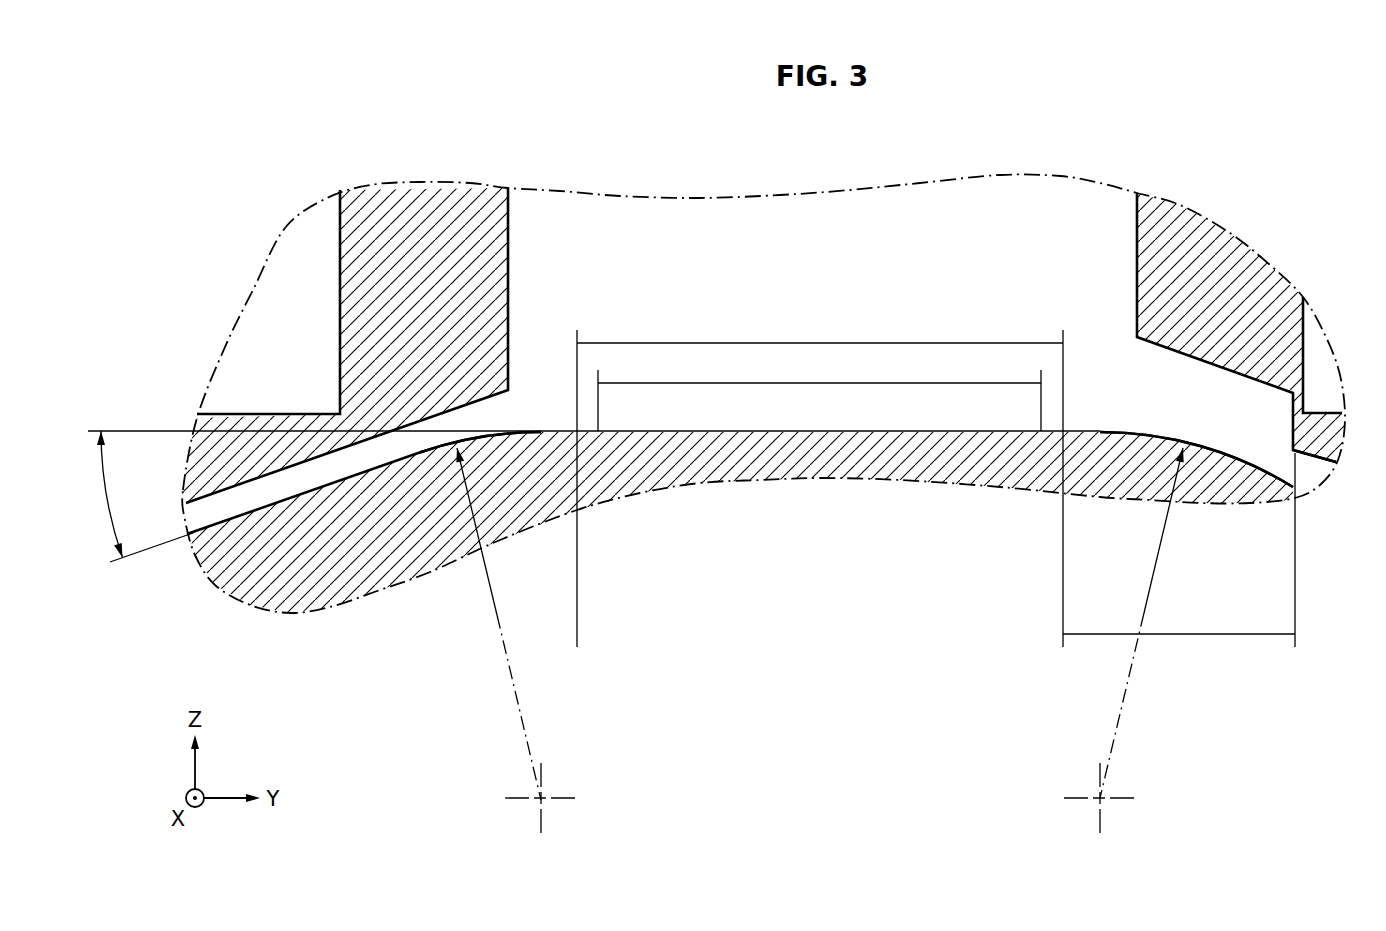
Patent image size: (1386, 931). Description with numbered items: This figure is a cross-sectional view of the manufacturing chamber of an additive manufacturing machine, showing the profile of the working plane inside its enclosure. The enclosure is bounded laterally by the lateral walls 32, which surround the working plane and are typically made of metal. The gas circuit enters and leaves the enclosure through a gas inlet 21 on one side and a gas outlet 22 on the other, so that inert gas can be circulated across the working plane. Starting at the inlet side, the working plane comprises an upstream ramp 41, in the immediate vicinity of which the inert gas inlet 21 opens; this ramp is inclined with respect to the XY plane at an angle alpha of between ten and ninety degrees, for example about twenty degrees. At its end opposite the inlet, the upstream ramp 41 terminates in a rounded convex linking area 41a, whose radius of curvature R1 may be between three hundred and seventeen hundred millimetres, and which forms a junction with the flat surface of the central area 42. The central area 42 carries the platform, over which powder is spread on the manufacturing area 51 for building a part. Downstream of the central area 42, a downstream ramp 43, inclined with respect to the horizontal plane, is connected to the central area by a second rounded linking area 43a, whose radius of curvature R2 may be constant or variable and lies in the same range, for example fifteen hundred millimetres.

The lateral walls 32 is at (410, 299).
The gas inlet 21 is at (198, 518).
The gas outlet 22 is at (1315, 470).
The upstream ramp 41 is at (195, 535).
The linking area 41a is at (477, 438).
The central area 42 is at (820, 482).
The downstream ramp 43 is at (1179, 539).
The linking area 43a is at (1140, 432).
The manufacturing area 51 is at (819, 394).
The radius of curvature R1 is at (490, 583).
The radius of curvature R2 is at (1158, 567).